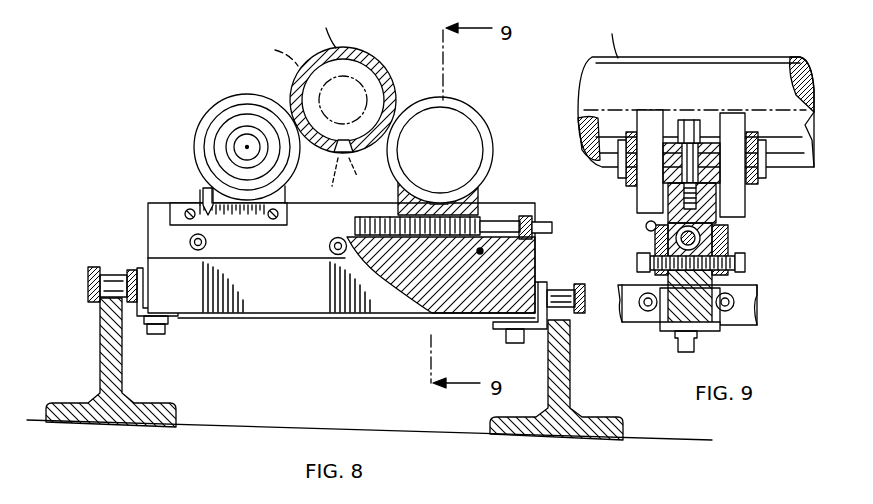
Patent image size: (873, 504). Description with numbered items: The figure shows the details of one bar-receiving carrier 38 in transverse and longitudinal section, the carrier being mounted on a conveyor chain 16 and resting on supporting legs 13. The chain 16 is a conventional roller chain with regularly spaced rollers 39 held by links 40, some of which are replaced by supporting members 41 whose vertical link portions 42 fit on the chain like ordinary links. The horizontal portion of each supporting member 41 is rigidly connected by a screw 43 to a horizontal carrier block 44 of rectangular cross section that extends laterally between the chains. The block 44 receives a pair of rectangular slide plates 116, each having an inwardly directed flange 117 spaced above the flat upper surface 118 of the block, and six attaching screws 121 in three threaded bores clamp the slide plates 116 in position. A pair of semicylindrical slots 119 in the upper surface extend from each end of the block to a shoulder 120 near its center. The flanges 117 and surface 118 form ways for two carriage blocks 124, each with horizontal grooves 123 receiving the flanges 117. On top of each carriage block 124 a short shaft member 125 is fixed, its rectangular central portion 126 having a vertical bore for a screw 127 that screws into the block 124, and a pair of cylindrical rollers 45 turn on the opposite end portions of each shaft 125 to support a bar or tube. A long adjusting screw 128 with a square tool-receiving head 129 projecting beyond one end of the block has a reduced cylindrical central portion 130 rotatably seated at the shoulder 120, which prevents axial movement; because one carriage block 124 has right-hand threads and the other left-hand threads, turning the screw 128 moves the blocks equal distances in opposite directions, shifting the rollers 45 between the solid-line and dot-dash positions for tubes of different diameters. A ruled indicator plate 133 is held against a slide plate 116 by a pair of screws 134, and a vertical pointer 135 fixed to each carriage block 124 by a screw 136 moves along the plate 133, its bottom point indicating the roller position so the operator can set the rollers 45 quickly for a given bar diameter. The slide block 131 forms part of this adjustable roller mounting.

In FIG. 8, the support leg 13 is at (100, 343).
In FIG. 8, the chain 16 is at (78, 262).
In FIG. 8, the bar-receiving carrier 38 is at (165, 134).
In FIG. 9, the bar-receiving carrier 38 is at (684, 78).
In FIG. 8, the roller 39 is at (112, 274).
In FIG. 8, the link 40 is at (88, 283).
In FIG. 8, the supporting member 41 is at (175, 320).
In FIG. 9, the vertical link portion 42 is at (740, 322).
In FIG. 8, the screw 43 is at (152, 334).
In FIG. 9, the screw 43 is at (678, 350).
In FIG. 8, the carrier block 44 is at (316, 318).
In FIG. 9, the carrier block 44 is at (660, 330).
In FIG. 8, the roller 45 is at (516, 104).
In FIG. 9, the roller 45 is at (655, 116).
In FIG. 8, the slide plate 116 is at (296, 260).
In FIG. 9, the slide plate 116 is at (744, 262).
In FIG. 8, the flange 117 is at (484, 220).
In FIG. 9, the flange 117 is at (728, 233).
In FIG. 8, the upper surface 118 is at (490, 218).
In FIG. 8, the semicylindrical slot 119 is at (532, 240).
In FIG. 9, the semicylindrical slot 119 is at (676, 238).
In FIG. 8, the shoulder 120 is at (332, 242).
In FIG. 8, the attaching screw 121 is at (478, 252).
In FIG. 9, the attaching screw 121 is at (647, 262).
In FIG. 9, the groove 123 is at (735, 210).
In FIG. 8, the carriage block 124 is at (320, 158).
In FIG. 9, the carriage block 124 is at (716, 196).
In FIG. 8, the shaft member 125 is at (245, 147).
In FIG. 9, the shaft member 125 is at (626, 172).
In FIG. 8, the central portion 126 is at (462, 158).
In FIG. 9, the central portion 126 is at (718, 140).
In FIG. 8, the screw 127 is at (447, 110).
In FIG. 9, the screw 127 is at (690, 118).
In FIG. 8, the adjusting screw 128 is at (380, 200).
In FIG. 8, the tool-receiving head 129 is at (553, 226).
In FIG. 8, the central portion 130 is at (358, 220).
In FIG. 8, the slide block 131 is at (472, 210).
In FIG. 8, the indicator plate 133 is at (270, 226).
In FIG. 9, the indicator plate 133 is at (646, 224).
In FIG. 8, the screw 134 is at (172, 210).
In FIG. 8, the pointer 135 is at (200, 200).
In FIG. 8, the screw 136 is at (204, 190).